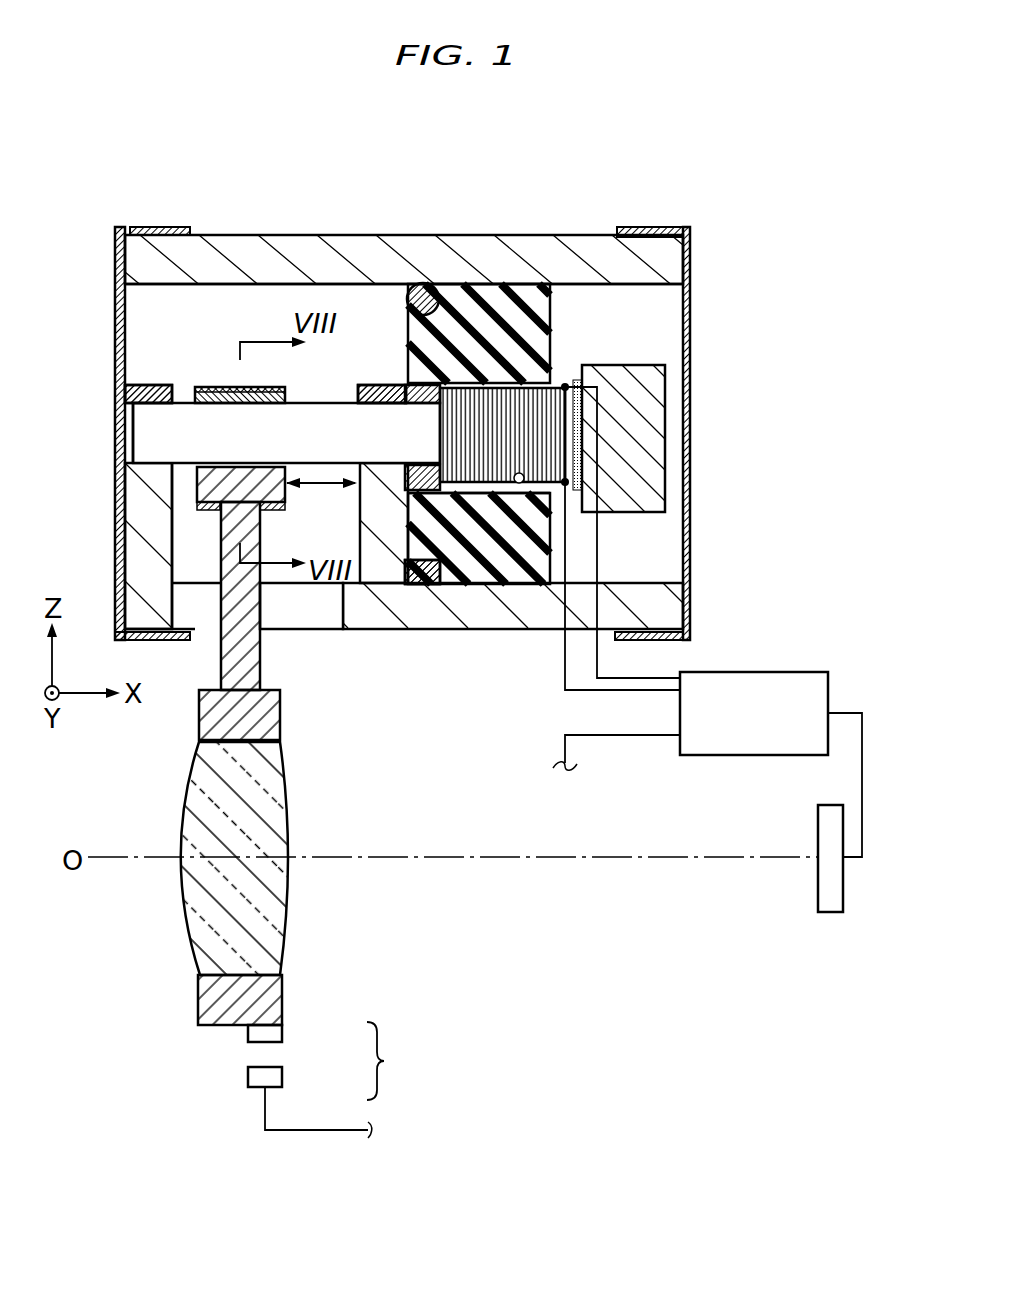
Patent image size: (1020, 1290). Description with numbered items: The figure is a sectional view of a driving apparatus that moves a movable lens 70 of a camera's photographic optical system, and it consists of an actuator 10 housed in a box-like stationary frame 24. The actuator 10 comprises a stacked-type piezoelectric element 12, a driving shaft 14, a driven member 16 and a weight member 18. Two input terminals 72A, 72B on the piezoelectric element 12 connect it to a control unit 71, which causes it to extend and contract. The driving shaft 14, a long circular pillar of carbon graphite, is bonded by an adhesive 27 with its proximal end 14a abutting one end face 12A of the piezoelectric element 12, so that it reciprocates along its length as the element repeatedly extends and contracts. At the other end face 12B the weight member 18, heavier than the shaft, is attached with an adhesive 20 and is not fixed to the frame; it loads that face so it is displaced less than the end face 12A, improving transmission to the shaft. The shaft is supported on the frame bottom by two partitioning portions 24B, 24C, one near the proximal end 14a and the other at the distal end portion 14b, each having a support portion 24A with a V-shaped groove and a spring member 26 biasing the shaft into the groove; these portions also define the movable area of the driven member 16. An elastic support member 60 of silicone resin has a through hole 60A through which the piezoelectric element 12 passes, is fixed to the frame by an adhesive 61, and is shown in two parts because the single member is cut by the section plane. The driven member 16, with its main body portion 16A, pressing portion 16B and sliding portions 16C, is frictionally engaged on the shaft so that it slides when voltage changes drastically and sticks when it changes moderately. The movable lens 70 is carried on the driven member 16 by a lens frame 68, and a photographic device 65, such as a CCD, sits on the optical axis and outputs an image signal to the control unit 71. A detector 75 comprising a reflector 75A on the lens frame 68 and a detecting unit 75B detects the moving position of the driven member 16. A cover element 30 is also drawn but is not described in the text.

The actuator 10 is at (270, 322).
The piezoelectric element 12 is at (552, 385).
The end face of piezoelectric element 12A is at (516, 485).
The other end face of piezoelectric element 12B is at (580, 425).
The driving shaft 14 is at (315, 402).
The proximal end of driving shaft 14a is at (358, 492).
The distal end portion of driving shaft 14b is at (152, 445).
The driven member 16 is at (190, 480).
The main body portion 16A is at (208, 583).
The pressing portion 16B is at (208, 387).
The sliding portion 16C is at (233, 387).
The weight member 18 is at (653, 512).
The adhesive 20 is at (577, 378).
The stationary frame 24 is at (512, 248).
The support portion 24A is at (135, 547).
The partitioning portion 24B is at (382, 368).
The partitioning portion 24C is at (152, 378).
The spring member 26 is at (125, 390).
The adhesive 27 is at (435, 385).
The cover 30 is at (692, 297).
The support member 60 is at (528, 295).
The through hole 60A is at (527, 500).
The adhesive 61 is at (423, 283).
The photographic device 65 is at (833, 912).
The lens frame 68 is at (198, 722).
The movable lens 70 is at (187, 768).
The control unit 71 is at (758, 672).
The input terminal 72A is at (565, 385).
The input terminal 72B is at (565, 484).
The detector 75 is at (390, 1061).
The reflector 75A is at (282, 1033).
The detecting unit 75B is at (282, 1077).